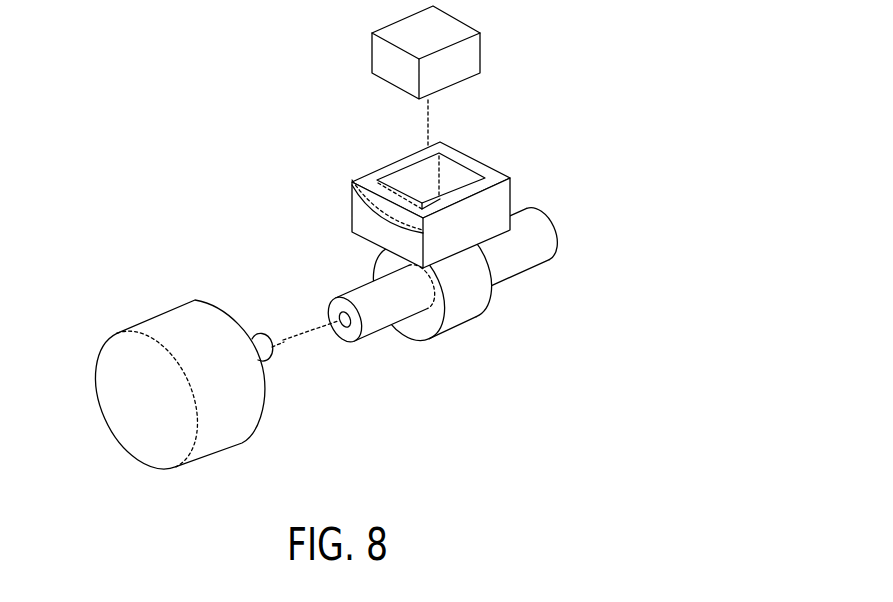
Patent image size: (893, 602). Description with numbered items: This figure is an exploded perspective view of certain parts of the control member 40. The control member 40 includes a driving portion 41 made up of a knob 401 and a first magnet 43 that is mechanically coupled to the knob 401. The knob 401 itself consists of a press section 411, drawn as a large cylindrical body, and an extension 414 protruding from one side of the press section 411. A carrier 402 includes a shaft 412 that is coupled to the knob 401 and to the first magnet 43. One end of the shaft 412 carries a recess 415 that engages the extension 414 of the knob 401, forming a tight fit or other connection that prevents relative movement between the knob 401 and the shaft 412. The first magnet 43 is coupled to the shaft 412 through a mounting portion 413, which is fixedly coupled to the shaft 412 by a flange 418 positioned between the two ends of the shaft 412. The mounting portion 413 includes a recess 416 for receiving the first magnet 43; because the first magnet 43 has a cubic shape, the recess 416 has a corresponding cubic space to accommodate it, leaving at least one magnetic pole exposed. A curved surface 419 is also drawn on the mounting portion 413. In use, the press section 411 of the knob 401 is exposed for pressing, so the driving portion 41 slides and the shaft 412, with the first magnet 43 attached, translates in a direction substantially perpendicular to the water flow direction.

The control member 40 is at (268, 214).
The driving portion 41 is at (463, 398).
The first magnet 43 is at (480, 43).
The knob 401 is at (272, 397).
The carrier 402 is at (457, 329).
The press section 411 is at (138, 443).
The shaft 412 is at (530, 257).
The mounting portion 413 is at (500, 173).
The extension 414 is at (258, 340).
The recess 415 is at (338, 320).
The recess 416 is at (452, 173).
The flange 418 is at (467, 310).
The curved surface 419 is at (375, 208).